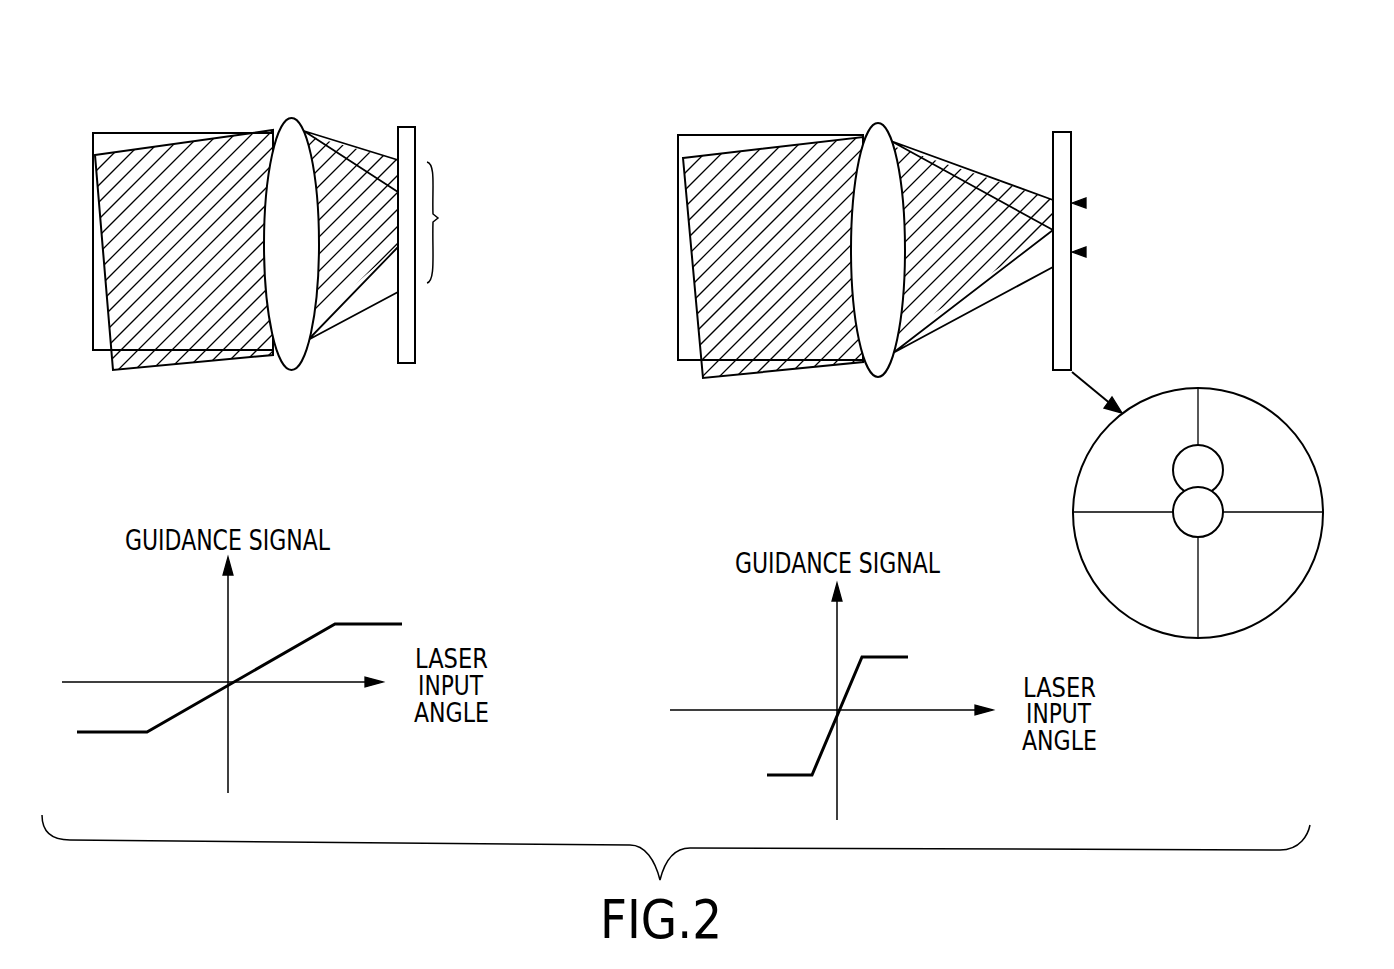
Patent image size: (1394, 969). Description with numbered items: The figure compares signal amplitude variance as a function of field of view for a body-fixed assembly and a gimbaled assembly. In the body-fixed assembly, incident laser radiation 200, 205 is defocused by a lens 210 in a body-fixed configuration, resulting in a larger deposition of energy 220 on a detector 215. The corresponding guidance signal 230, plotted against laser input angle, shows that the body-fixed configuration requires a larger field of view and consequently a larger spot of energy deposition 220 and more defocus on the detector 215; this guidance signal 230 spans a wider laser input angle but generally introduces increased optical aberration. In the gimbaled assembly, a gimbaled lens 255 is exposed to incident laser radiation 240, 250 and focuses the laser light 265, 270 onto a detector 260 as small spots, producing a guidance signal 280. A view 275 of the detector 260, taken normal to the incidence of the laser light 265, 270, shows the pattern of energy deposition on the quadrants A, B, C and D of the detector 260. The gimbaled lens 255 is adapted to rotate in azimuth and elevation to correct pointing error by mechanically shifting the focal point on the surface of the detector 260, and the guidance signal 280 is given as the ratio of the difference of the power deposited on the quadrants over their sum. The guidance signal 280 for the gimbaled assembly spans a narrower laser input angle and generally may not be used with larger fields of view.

The incident laser radiation 200 is at (108, 143).
The incident laser radiation 205 is at (182, 173).
The lens 210 is at (297, 130).
The detector 215 is at (410, 127).
The large spot of energy deposition 220 is at (455, 222).
The guidance signal 230 is at (307, 633).
The incident laser radiation 240 is at (698, 145).
The incident laser radiation 250 is at (777, 167).
The gimbaled lens 255 is at (883, 137).
The detector 260 is at (1063, 130).
The focused laser light 265 is at (1085, 203).
The focused laser light 270 is at (1086, 252).
The view of detector 275 is at (1282, 603).
The guidance signal 280 is at (892, 657).